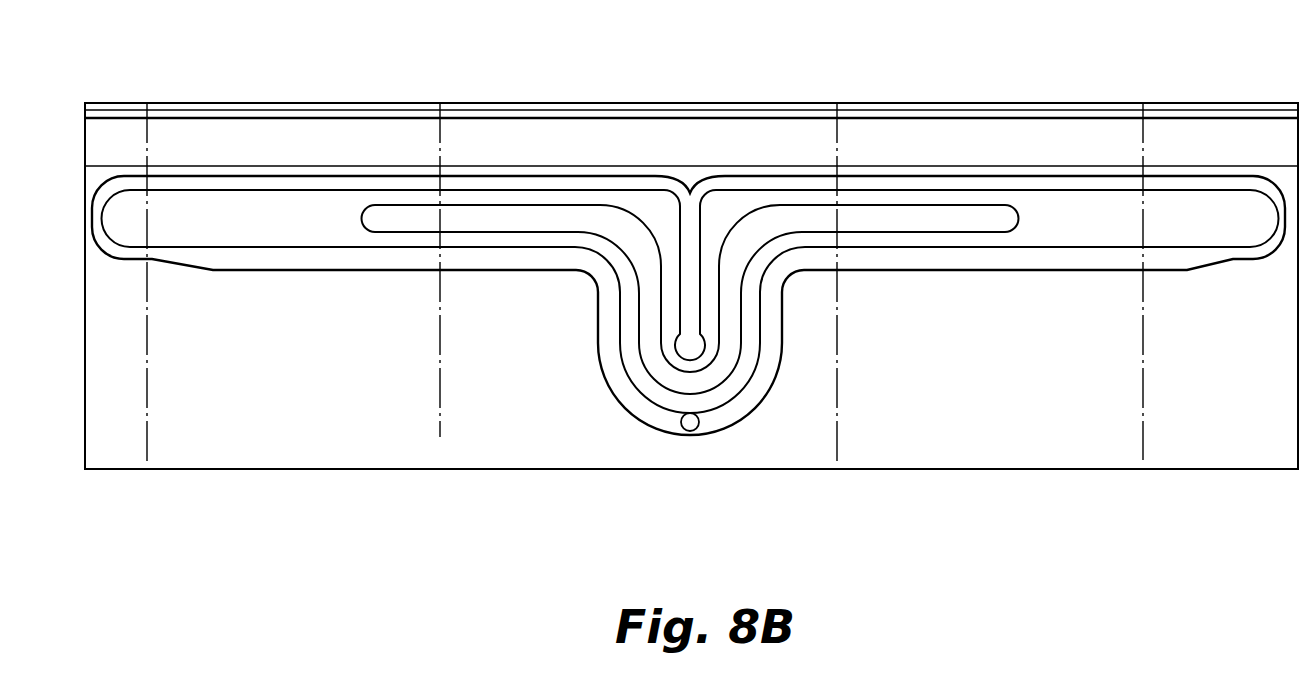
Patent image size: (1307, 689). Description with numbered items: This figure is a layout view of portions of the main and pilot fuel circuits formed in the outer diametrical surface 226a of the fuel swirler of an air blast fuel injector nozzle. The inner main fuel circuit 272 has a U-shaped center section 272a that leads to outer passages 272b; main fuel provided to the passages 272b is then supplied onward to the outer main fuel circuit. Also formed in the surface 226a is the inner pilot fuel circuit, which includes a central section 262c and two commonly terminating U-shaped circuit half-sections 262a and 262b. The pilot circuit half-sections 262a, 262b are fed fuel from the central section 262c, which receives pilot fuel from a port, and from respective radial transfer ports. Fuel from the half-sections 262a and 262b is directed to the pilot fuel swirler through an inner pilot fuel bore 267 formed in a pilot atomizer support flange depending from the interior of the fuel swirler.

The outer diametrical surface 226a is at (1068, 442).
The pilot circuit half-section 262a is at (225, 181).
The pilot circuit half-section 262b is at (1181, 183).
The central section 262c is at (690, 237).
The inner pilot fuel bore 267 is at (690, 422).
The inner main fuel circuit 272 is at (690, 217).
The U-shaped center section 272a is at (650, 313).
The outer passages 272b is at (482, 218).